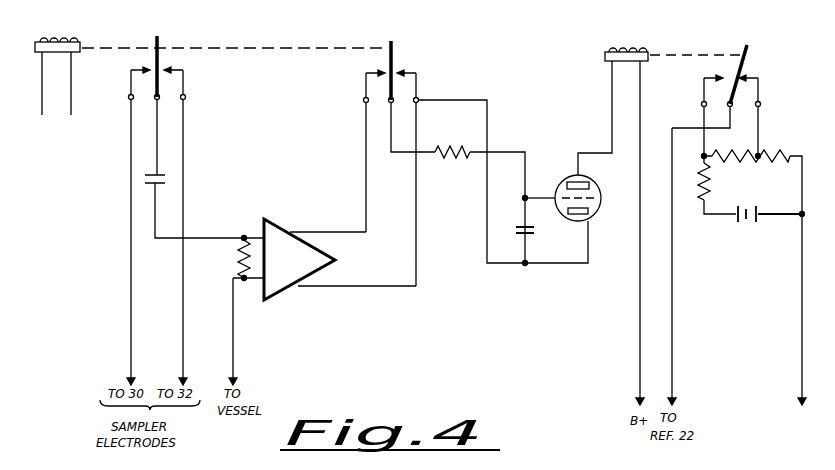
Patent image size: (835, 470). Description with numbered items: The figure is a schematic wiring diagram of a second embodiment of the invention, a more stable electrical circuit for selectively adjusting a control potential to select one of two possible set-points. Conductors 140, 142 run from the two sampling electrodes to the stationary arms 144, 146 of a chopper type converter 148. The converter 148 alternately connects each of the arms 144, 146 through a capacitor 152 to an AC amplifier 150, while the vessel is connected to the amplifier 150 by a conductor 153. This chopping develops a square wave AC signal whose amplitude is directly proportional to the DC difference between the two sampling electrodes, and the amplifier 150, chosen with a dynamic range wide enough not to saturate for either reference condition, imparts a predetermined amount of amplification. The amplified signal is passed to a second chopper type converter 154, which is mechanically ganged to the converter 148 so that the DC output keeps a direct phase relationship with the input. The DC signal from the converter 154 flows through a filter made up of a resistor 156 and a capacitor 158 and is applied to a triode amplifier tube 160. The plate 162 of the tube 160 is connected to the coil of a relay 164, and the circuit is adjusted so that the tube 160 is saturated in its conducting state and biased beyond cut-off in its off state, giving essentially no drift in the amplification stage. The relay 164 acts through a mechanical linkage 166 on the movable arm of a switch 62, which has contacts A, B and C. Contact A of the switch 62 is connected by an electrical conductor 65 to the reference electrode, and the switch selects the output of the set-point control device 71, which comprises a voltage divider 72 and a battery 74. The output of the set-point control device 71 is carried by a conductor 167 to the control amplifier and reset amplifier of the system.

The switch 62 is at (750, 90).
The electrical conductor 65 is at (673, 282).
The set-point control device 71 is at (724, 225).
The voltage divider 72 is at (793, 152).
The battery 74 is at (752, 224).
The conductor 140 is at (130, 315).
The conductor 142 is at (182, 315).
The stationary arm 144 is at (130, 82).
The stationary arm 146 is at (186, 84).
The chopper type converter 148 is at (146, 97).
The AC amplifier 150 is at (272, 232).
The capacitor 152 is at (150, 184).
The conductor 153 is at (234, 322).
The second chopper type converter 154 is at (402, 107).
The resistor 156 is at (456, 162).
The capacitor 158 is at (538, 232).
The triode amplifier tube 160 is at (600, 191).
The plate 162 is at (574, 182).
The relay 164 is at (628, 48).
The mechanical linkage 166 is at (688, 55).
The conductor 167 is at (801, 318).